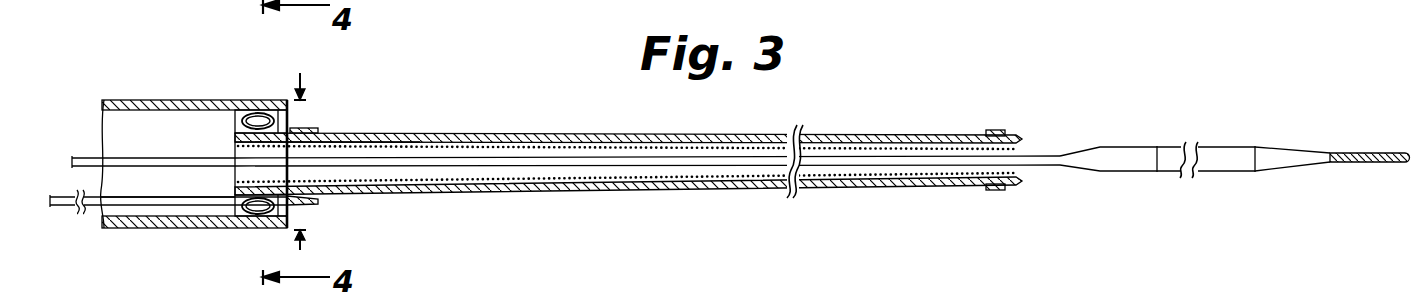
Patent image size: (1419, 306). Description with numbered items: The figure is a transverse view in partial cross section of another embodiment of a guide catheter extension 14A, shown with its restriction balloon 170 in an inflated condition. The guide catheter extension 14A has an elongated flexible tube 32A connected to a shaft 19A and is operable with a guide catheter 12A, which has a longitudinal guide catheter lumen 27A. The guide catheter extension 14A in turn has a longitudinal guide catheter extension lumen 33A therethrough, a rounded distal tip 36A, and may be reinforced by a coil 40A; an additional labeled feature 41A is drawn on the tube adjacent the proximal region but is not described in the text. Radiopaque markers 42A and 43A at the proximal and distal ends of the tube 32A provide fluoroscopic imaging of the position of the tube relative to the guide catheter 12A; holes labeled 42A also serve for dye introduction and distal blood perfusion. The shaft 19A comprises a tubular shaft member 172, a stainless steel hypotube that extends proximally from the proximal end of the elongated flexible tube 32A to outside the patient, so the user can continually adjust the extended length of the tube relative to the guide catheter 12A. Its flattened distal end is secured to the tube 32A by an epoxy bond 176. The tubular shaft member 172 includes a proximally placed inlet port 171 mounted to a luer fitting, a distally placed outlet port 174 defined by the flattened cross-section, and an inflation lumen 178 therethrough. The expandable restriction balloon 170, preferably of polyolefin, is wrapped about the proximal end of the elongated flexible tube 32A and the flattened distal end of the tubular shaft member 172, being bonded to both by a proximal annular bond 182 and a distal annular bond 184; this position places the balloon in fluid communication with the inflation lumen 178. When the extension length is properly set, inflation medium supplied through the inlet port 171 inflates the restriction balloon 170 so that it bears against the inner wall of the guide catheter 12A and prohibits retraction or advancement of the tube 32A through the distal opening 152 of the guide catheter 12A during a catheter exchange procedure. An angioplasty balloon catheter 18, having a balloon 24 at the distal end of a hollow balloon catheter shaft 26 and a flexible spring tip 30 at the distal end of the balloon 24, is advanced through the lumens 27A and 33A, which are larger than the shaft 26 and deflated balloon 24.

The guide catheter 12A is at (115, 100).
The longitudinal guide catheter lumen 27A is at (170, 118).
The proximal annular bond 182 is at (243, 112).
The expandable restriction balloon 170 is at (263, 110).
The distal annular bond 184 is at (302, 128).
The outer tube proximal end 41A is at (320, 131).
The proximal radiopaque marker 42A is at (362, 133).
The coil 40A is at (460, 141).
The guide catheter extension 14A is at (535, 128).
The elongated flexible tube 32A is at (592, 137).
The longitudinal guide catheter extension lumen 33A is at (728, 147).
The distal radiopaque marker 43A is at (995, 130).
The rounded distal tip 36A is at (1017, 186).
The angioplasty balloon catheter 18 is at (1216, 138).
The balloon 24 is at (1267, 148).
The flexible spring tip 30 is at (1350, 152).
The hollow balloon catheter shaft 26 is at (74, 157).
The shaft 19A is at (143, 197).
The inlet port 171 is at (50, 206).
The inflation lumen 178 is at (93, 208).
The tubular shaft member 172 is at (168, 207).
The epoxy bond 176 is at (236, 214).
The outlet port 174 is at (298, 199).
The distal opening 152 is at (319, 171).